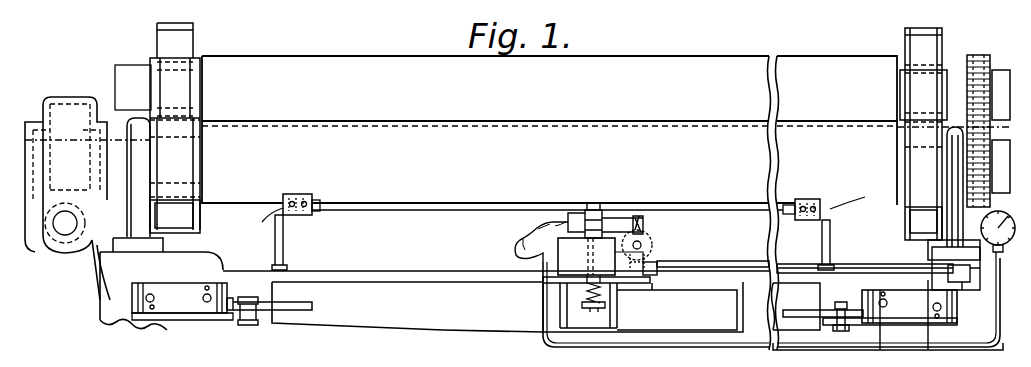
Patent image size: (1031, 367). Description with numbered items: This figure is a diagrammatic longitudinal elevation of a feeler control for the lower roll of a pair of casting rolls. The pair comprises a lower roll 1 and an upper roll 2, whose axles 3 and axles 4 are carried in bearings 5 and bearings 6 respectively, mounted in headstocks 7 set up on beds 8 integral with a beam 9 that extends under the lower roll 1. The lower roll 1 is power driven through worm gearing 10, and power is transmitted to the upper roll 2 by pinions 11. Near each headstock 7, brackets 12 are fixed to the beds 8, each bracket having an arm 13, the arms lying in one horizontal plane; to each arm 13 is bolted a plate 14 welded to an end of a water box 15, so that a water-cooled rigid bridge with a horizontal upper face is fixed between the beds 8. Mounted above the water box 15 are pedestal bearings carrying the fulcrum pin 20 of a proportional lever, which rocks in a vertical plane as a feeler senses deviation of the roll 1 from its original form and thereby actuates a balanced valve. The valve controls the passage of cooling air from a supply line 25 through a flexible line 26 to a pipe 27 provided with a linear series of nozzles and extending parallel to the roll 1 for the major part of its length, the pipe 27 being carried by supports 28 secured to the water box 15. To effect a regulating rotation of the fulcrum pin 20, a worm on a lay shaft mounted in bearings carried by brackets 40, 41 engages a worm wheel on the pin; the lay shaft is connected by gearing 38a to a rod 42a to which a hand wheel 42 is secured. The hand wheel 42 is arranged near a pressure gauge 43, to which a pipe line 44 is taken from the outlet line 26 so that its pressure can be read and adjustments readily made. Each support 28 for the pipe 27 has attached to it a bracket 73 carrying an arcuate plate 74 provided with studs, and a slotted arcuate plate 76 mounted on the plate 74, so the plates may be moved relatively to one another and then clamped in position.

The lower roll 1 is at (482, 173).
The upper roll 2 is at (490, 106).
The axles 3 is at (118, 150).
The axles 4 is at (126, 65).
The bearings 5 is at (150, 193).
The bearings 6 is at (197, 58).
The headstocks 7 is at (135, 220).
The beds 8 is at (173, 279).
The beam 9 is at (398, 273).
The worm gearing 10 is at (62, 202).
The pinions 11 is at (965, 170).
The brackets 12 is at (183, 300).
The arm 13 is at (245, 320).
The plate 14 is at (299, 311).
The water box 15 is at (405, 317).
The fulcrum pin 20 is at (620, 218).
The supply line 25 is at (660, 262).
The flexible line 26 is at (512, 240).
The pipe 27 is at (553, 203).
The supports 28 is at (284, 256).
The gearing 38a is at (652, 245).
The bracket 40 is at (660, 277).
The bracket 41 is at (888, 325).
The hand wheel 42 is at (955, 300).
The rod 42a is at (743, 262).
The pressure gauge 43 is at (983, 268).
The pipe line 44 is at (681, 347).
The bracket 73 is at (563, 208).
The arcuate plate 74 is at (300, 196).
The slotted arcuate plate 76 is at (315, 208).